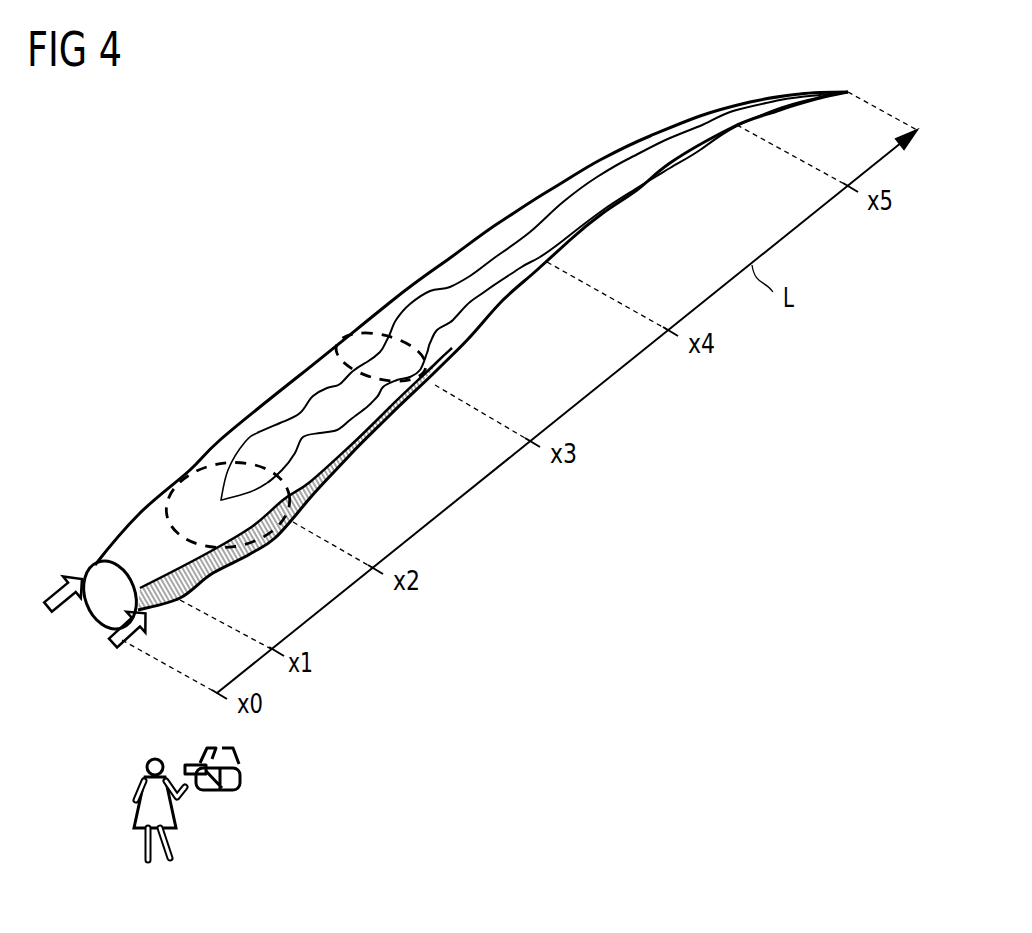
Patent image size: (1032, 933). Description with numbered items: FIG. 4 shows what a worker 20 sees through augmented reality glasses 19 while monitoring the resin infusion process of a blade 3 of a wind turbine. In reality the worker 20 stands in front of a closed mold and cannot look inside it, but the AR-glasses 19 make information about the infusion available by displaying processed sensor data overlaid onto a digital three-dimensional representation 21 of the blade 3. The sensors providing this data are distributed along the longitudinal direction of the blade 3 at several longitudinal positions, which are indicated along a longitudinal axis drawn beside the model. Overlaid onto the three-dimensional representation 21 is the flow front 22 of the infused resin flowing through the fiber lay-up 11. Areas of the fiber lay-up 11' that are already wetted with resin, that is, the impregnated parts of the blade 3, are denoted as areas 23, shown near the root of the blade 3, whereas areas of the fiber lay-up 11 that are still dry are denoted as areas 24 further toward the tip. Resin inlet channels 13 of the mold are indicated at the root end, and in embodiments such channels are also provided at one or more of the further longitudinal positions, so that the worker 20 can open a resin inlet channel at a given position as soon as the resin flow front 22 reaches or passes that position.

The blade 3 is at (398, 293).
The three-dimensional representation 21 is at (493, 351).
The fiber lay-up 11 is at (552, 262).
The dry areas of the fiber lay-up 24 is at (557, 287).
The flow front 22 is at (257, 433).
The wetted fiber lay-up 11' is at (183, 505).
The impregnated areas 23 is at (276, 405).
The resin inlet channels 13 is at (60, 589).
The augmented reality glasses 19 is at (242, 780).
The worker 20 is at (135, 815).